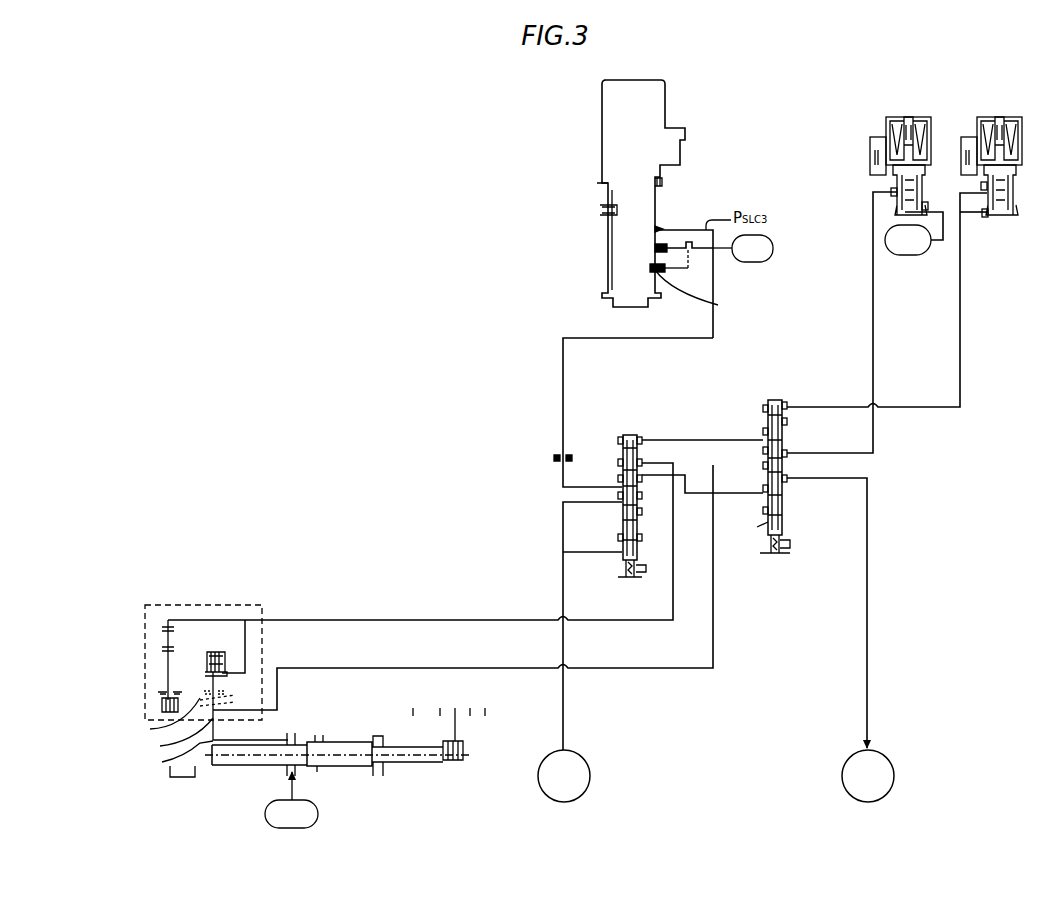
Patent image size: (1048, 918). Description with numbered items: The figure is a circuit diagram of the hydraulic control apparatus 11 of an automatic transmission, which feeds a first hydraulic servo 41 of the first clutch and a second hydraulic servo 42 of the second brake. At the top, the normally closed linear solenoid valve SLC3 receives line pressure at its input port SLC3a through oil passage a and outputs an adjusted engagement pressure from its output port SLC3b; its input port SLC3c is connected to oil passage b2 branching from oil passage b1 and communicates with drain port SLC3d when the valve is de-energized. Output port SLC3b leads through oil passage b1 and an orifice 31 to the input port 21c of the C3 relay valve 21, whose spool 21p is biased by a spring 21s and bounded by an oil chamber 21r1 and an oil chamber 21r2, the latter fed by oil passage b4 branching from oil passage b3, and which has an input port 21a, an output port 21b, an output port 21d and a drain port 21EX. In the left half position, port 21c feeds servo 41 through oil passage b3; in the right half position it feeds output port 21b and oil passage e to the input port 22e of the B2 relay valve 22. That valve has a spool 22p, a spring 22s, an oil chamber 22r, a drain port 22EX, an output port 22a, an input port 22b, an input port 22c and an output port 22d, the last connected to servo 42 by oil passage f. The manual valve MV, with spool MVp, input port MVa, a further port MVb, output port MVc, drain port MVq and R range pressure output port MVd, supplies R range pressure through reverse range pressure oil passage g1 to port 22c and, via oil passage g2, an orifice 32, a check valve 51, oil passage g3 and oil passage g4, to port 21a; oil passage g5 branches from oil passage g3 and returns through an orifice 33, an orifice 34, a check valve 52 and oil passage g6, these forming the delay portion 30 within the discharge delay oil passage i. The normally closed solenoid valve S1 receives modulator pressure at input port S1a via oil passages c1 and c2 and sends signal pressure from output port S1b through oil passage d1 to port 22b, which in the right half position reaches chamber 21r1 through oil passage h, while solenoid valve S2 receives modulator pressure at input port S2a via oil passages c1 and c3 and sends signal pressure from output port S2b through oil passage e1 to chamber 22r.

The hydraulic control apparatus 11 is at (779, 114).
The C3 relay valve 21 is at (633, 430).
The spool 21p is at (620, 440).
The input port 21c is at (621, 486).
The output port 21d is at (621, 500).
The spring 21s is at (622, 540).
The oil chamber 21r1 is at (640, 437).
The oil chamber 21r2 is at (623, 560).
The input port 21a is at (642, 465).
The output port 21b is at (656, 489).
The drain port 21EX is at (643, 510).
The B2 relay valve 22 is at (781, 398).
The spool 22p is at (766, 410).
The output port 22a is at (766, 433).
The input port 22b is at (787, 455).
The input port 22c is at (762, 465).
The output port 22d is at (787, 478).
The input port 22e is at (762, 490).
The oil chamber 22r is at (785, 402).
The spring 22s is at (768, 512).
The drain port 22EX is at (786, 421).
The delay portion 30 is at (202, 600).
The orifice 31 is at (558, 446).
The orifice 32 is at (228, 690).
The orifice 33 is at (160, 618).
The orifice 34 is at (160, 640).
The first hydraulic servo 41 is at (587, 752).
The second hydraulic servo 42 is at (889, 752).
The check valve 51 is at (214, 650).
The check valve 52 is at (162, 700).
The linear solenoid valve SLC3 is at (634, 79).
The input port SLC3a is at (660, 248).
The output port SLC3b is at (660, 228).
The input port SLC3c is at (718, 305).
The drain port SLC3d is at (598, 210).
The solenoid valve S1 is at (908, 116).
The input port S1a is at (926, 206).
The output port S1b is at (892, 191).
The solenoid valve S2 is at (1003, 116).
The input port S2a is at (986, 214).
The output port S2b is at (985, 186).
The oil passage a is at (684, 284).
The oil passage b1 is at (687, 338).
The oil passage b2 is at (668, 270).
The oil passage b3 is at (562, 527).
The oil passage b4 is at (562, 556).
The oil passage c1 is at (934, 245).
The oil passage c2 is at (905, 212).
The oil passage c3 is at (967, 214).
The oil passage d1 is at (874, 336).
The oil passage e is at (698, 494).
The oil passage e1 is at (961, 336).
The oil passage f is at (868, 545).
The reverse range pressure oil passage g1 is at (338, 668).
The oil passage g2 is at (224, 698).
The oil passage g3 is at (246, 636).
The oil passage g4 is at (360, 620).
The oil passage g5 is at (222, 620).
The oil passage g6 is at (150, 729).
The oil passage h is at (680, 440).
The discharge delay oil passage i is at (485, 618).
The manual valve MV is at (338, 770).
The input port MVa is at (298, 772).
The output port of manual valve MVb is at (289, 736).
The output port MVc is at (323, 736).
The output port MVd is at (162, 762).
The spool MVp is at (358, 758).
The drain port MVq is at (200, 777).